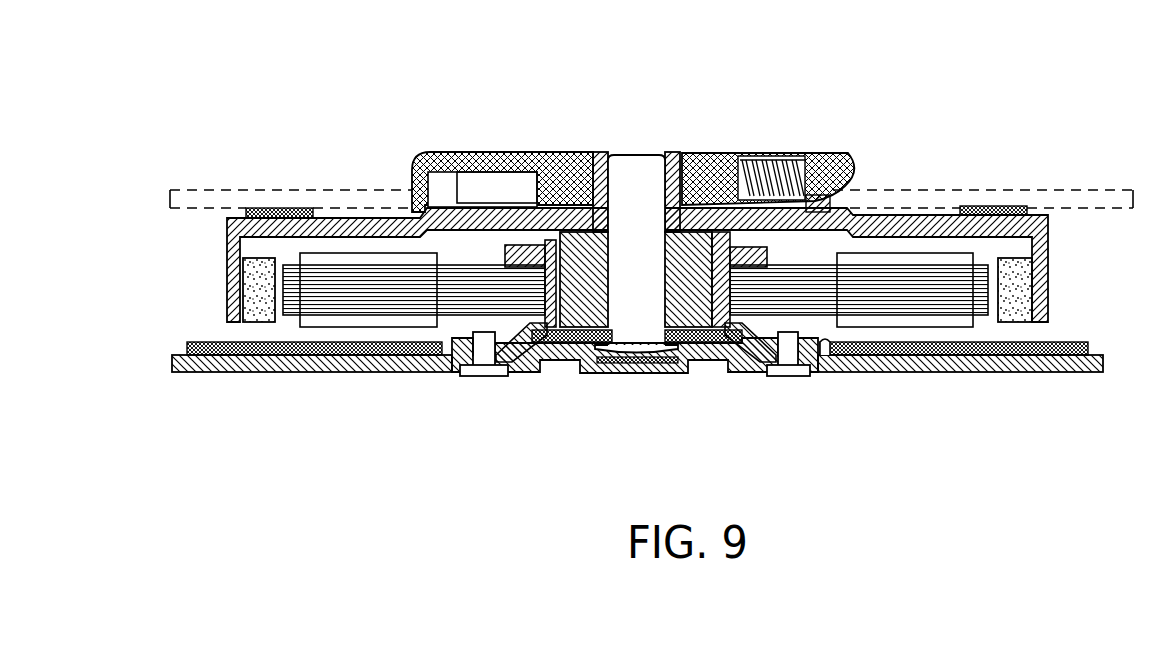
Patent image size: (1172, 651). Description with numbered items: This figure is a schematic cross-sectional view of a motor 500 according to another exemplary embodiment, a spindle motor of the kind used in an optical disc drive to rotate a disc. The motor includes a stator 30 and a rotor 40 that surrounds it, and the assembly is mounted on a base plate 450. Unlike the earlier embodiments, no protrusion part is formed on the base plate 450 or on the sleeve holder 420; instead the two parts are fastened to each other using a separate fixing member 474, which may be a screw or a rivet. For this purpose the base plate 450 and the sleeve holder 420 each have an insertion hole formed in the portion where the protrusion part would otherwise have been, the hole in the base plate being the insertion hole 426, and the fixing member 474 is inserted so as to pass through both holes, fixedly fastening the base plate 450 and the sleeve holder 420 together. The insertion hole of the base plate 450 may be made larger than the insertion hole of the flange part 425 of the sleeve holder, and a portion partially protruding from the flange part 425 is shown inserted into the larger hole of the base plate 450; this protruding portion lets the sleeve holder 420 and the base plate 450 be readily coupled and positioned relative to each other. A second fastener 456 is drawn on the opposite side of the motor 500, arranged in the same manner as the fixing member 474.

The motor 500 is at (667, 258).
The rotor 40 is at (1071, 258).
The stator 30 is at (1013, 331).
The sleeve holder 420 is at (521, 364).
The insertion hole 426 is at (477, 368).
The screw 456 is at (498, 377).
The fixing member 474 is at (773, 382).
The flange part 425 is at (833, 376).
The base plate 450 is at (937, 381).